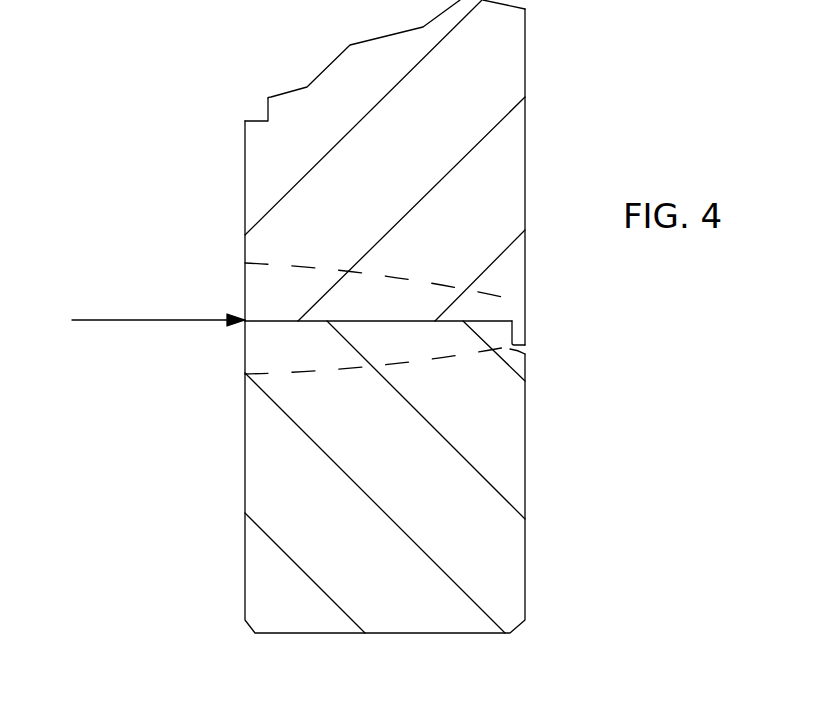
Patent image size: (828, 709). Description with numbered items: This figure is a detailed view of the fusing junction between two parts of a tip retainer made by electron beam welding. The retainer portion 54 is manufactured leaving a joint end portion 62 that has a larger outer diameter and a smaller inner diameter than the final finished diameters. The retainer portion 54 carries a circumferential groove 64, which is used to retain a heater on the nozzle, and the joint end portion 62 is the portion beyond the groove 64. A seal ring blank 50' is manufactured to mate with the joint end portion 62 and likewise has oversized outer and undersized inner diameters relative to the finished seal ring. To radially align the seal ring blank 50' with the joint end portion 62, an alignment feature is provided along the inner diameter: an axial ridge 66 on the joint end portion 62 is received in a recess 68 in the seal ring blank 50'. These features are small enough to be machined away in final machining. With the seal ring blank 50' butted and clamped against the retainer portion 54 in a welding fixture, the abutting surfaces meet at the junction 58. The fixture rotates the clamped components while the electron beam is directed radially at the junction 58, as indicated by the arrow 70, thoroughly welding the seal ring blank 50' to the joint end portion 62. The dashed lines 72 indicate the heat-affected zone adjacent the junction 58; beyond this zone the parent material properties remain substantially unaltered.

The seal ring blank 50' is at (432, 477).
The retainer portion 54 is at (525, 52).
The junction 58 is at (270, 318).
The joint end portion 62 is at (245, 196).
The circumferential groove 64 is at (257, 118).
The axial ridge 66 is at (523, 333).
The recess 68 is at (523, 358).
The arrow 70 is at (113, 317).
The dashed lines 72 is at (400, 277).